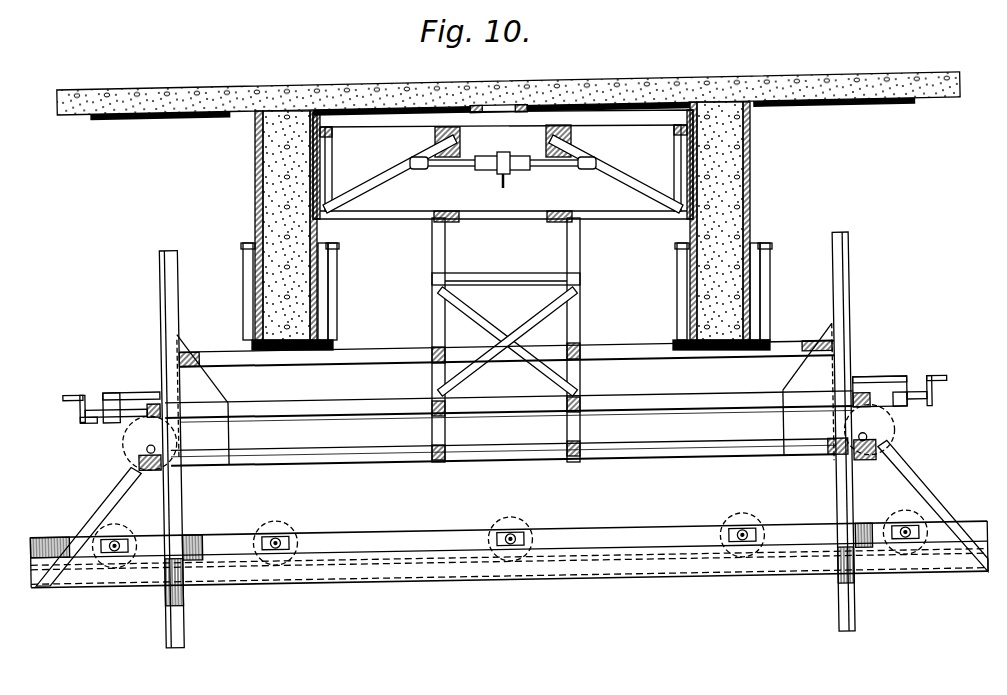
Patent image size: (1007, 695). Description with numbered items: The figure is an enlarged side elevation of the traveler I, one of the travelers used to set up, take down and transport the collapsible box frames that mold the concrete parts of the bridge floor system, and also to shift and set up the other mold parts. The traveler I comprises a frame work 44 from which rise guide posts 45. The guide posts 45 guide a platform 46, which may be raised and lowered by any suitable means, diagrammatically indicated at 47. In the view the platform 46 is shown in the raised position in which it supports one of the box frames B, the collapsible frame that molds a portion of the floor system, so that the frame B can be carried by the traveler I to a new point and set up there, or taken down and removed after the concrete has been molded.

The frame work 44 is at (368, 531).
The guide posts 45 is at (183, 500).
The platform 46 is at (440, 318).
The raising and lowering means 47 is at (125, 438).
The box frame B is at (328, 161).
The traveler I is at (442, 597).